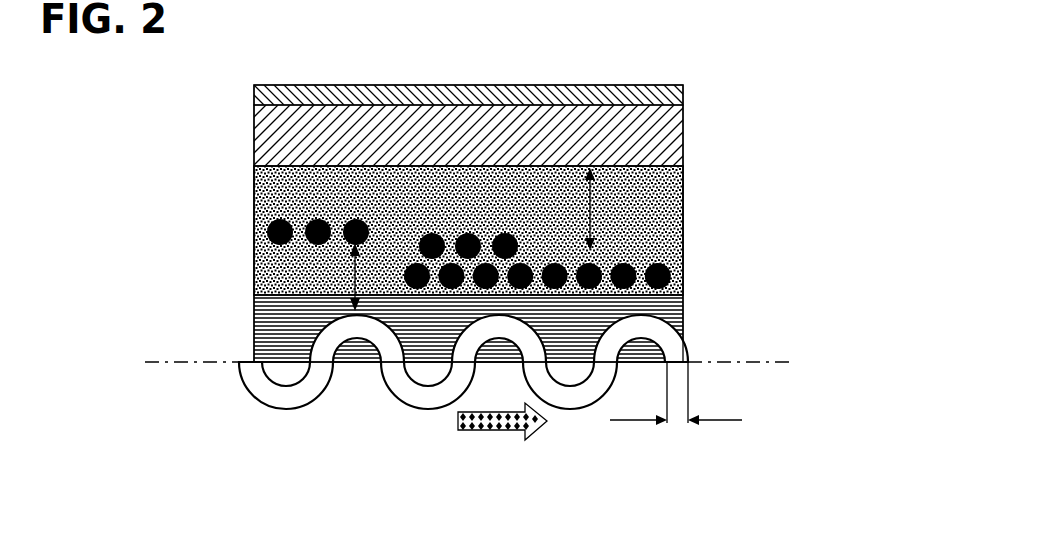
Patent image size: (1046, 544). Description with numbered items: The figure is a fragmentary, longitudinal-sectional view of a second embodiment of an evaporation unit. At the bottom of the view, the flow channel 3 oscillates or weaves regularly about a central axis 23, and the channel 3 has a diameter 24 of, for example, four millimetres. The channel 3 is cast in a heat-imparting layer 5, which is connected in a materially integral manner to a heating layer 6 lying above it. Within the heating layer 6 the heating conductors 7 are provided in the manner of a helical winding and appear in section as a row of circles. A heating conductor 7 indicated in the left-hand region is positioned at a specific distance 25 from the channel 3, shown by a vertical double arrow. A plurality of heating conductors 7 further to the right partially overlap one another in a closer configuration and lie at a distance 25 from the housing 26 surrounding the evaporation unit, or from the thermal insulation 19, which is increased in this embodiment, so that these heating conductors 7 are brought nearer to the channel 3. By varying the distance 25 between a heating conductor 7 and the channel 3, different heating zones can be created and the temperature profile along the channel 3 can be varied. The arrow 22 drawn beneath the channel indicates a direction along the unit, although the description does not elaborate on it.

The housing 26 is at (683, 92).
The thermal insulation 19 is at (683, 132).
The heating layer 6 is at (665, 223).
The heating conductors 7 is at (673, 265).
The distance 25 is at (355, 283).
The heat-imparting layer 5 is at (254, 317).
The flow channel 3 is at (672, 332).
The central axis 23 is at (180, 362).
The diameter 24 is at (677, 422).
The direction of movement 22 is at (497, 430).